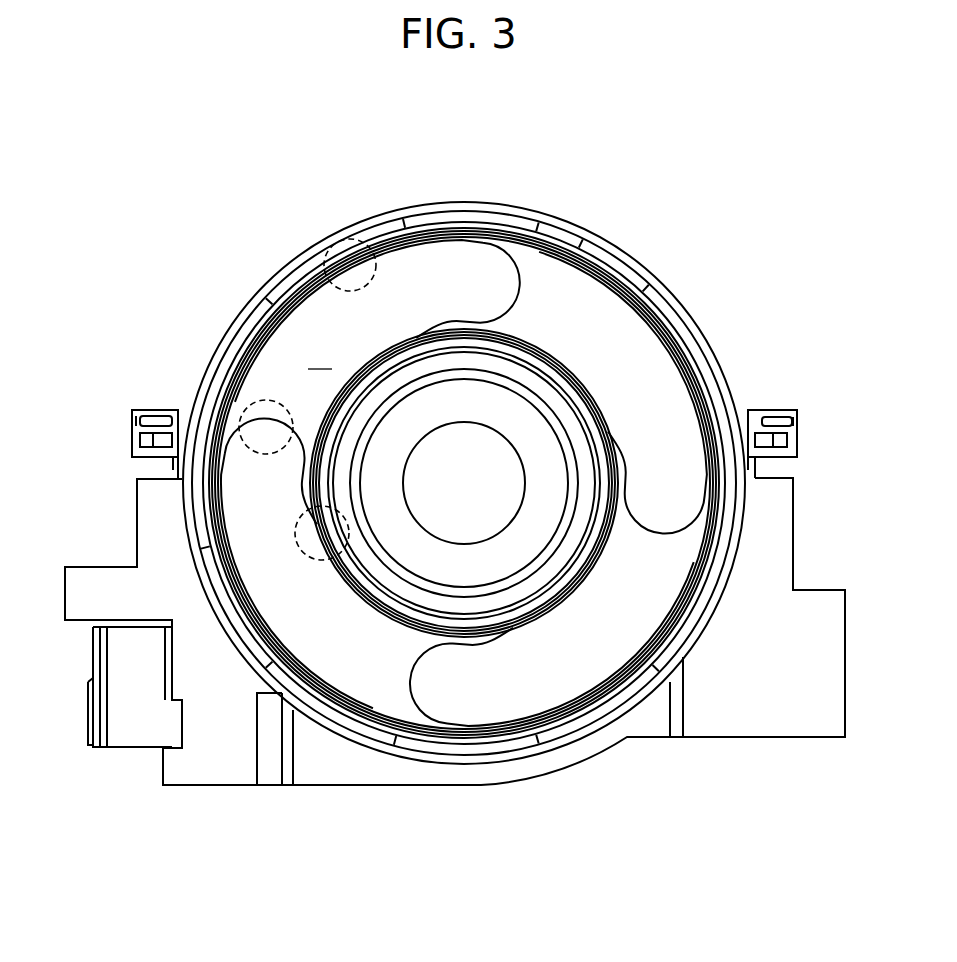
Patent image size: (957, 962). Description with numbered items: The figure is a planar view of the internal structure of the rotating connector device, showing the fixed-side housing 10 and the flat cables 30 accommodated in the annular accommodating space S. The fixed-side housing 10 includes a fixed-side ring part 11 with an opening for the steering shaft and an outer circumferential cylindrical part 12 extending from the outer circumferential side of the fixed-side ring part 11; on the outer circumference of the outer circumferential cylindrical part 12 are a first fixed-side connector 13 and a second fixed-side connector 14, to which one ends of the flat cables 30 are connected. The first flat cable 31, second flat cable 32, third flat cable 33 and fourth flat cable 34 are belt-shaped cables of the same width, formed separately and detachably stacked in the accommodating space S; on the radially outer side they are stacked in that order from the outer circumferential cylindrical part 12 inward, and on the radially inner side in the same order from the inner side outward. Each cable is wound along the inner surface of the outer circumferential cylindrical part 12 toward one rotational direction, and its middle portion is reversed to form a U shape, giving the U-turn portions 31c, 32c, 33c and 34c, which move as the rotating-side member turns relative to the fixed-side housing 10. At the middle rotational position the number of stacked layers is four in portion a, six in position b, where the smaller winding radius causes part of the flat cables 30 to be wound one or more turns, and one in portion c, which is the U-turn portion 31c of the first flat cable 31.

The fixed-side housing 10 is at (455, 574).
The fixed-side ring part 11 is at (333, 752).
The outer circumferential cylindrical part 12 is at (476, 753).
The first fixed-side connector 13 is at (205, 758).
The second fixed-side connector 14 is at (757, 713).
The flat cables 30 is at (465, 479).
The first flat cable 31 is at (214, 525).
The U-turn portion of the first flat cable 31c is at (233, 428).
The second flat cable 32 is at (399, 265).
The U-turn portion of the second flat cable 32c is at (527, 248).
The third flat cable 33 is at (717, 399).
The U-turn portion of the third flat cable 33c is at (700, 535).
The fourth flat cable 34 is at (459, 697).
The U-turn portion of the fourth flat cable 34c is at (395, 690).
The portion a is at (346, 239).
The position b is at (295, 534).
The portion c is at (265, 400).
The accommodating space S is at (320, 356).